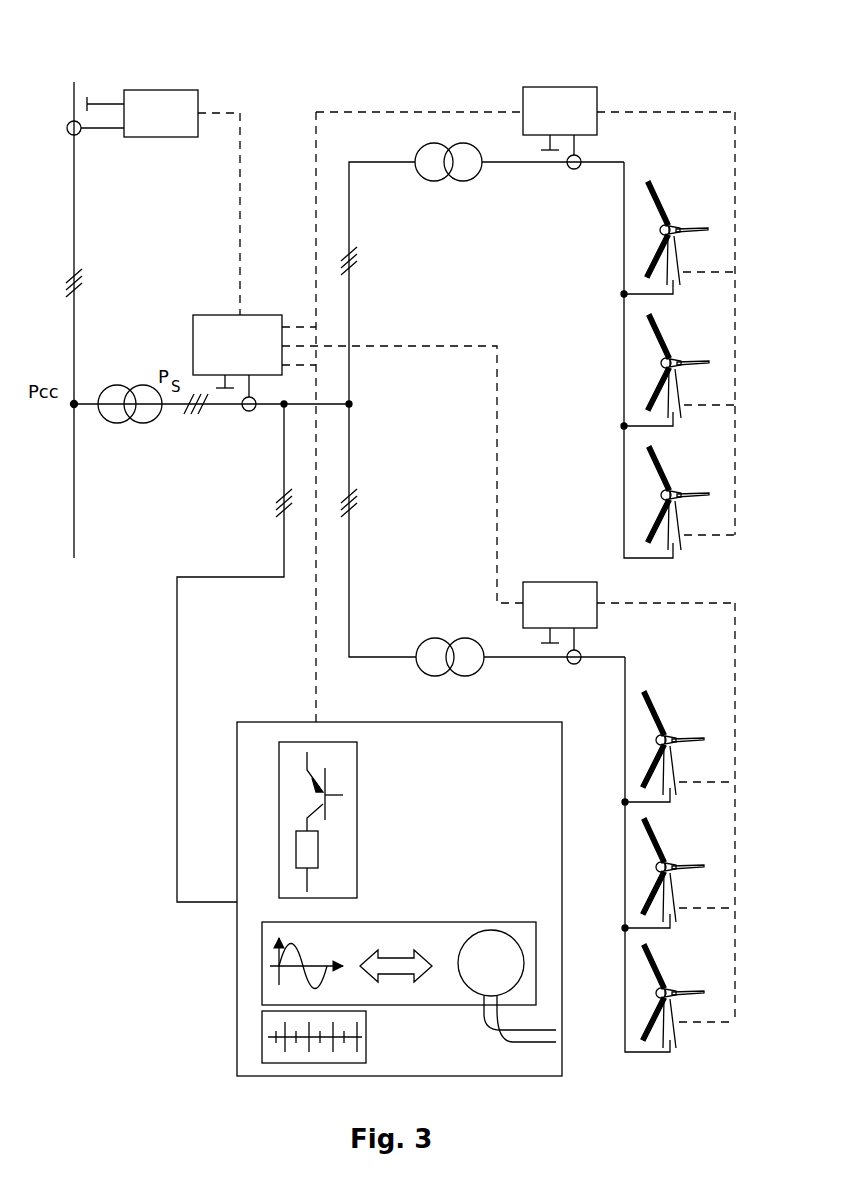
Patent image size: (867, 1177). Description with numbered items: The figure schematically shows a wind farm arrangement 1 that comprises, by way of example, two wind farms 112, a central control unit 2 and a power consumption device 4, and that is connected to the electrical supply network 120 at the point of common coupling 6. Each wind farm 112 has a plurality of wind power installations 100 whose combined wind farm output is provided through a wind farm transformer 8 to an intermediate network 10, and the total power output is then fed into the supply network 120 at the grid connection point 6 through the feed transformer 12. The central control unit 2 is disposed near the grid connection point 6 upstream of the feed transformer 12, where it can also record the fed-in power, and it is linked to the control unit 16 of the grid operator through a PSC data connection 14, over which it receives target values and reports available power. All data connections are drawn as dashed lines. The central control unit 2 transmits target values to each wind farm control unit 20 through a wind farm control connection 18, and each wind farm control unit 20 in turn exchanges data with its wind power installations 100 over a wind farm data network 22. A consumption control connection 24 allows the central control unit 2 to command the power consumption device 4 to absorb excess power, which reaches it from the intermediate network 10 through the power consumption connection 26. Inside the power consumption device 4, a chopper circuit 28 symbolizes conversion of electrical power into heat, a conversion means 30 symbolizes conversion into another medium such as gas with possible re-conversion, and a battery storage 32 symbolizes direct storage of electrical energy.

The wind farm arrangement 1 is at (262, 92).
The central control unit 2 is at (213, 315).
The power consumption device 4 is at (399, 934).
The point of common coupling 6 is at (73, 408).
The wind farm transformer 8 is at (450, 186).
The intermediate network 10 is at (349, 315).
The feed transformer 12 is at (133, 430).
The PSC data connection 14 is at (240, 190).
The control unit of the grid operator 16 is at (146, 90).
The wind farm control connection 18 is at (398, 112).
The wind farm control unit 20 is at (535, 87).
The wind farm data network 22 is at (644, 112).
The consumption control connection 24 is at (316, 630).
The power consumption connection 26 is at (177, 612).
The chopper circuit 28 is at (352, 772).
The conversion means 30 is at (400, 928).
The battery storage 32 is at (366, 1042).
The wind power installation 100 is at (676, 211).
The wind farm 112 is at (699, 90).
The electrical supply network 120 is at (72, 211).